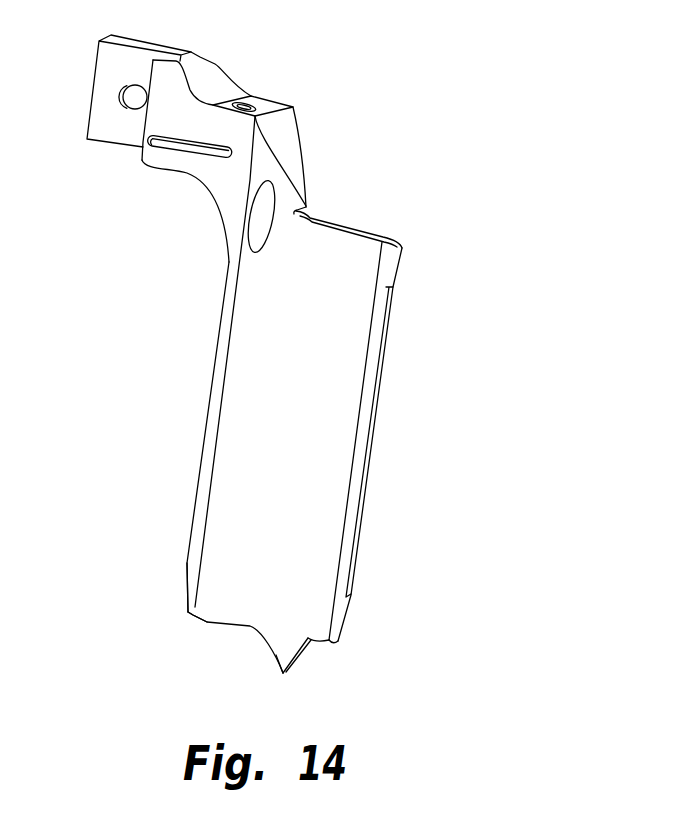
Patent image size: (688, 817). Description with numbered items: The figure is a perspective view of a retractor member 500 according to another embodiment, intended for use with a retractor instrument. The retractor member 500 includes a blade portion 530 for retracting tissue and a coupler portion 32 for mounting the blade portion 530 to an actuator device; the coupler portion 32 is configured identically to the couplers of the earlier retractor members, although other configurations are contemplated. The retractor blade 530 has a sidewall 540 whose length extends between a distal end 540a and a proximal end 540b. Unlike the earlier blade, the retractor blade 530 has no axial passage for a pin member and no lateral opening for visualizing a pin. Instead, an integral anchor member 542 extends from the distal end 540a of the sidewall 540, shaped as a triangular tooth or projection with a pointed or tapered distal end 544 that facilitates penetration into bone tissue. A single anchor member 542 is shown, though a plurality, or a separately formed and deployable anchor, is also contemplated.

The retractor member 500 is at (367, 168).
The coupler portion 32 is at (130, 157).
The blade portion 530 is at (197, 393).
The sidewall 540 is at (222, 323).
The distal end 540a is at (182, 603).
The proximal end 540b is at (410, 233).
The anchor member 542 is at (302, 658).
The tapered distal end 544 is at (283, 673).